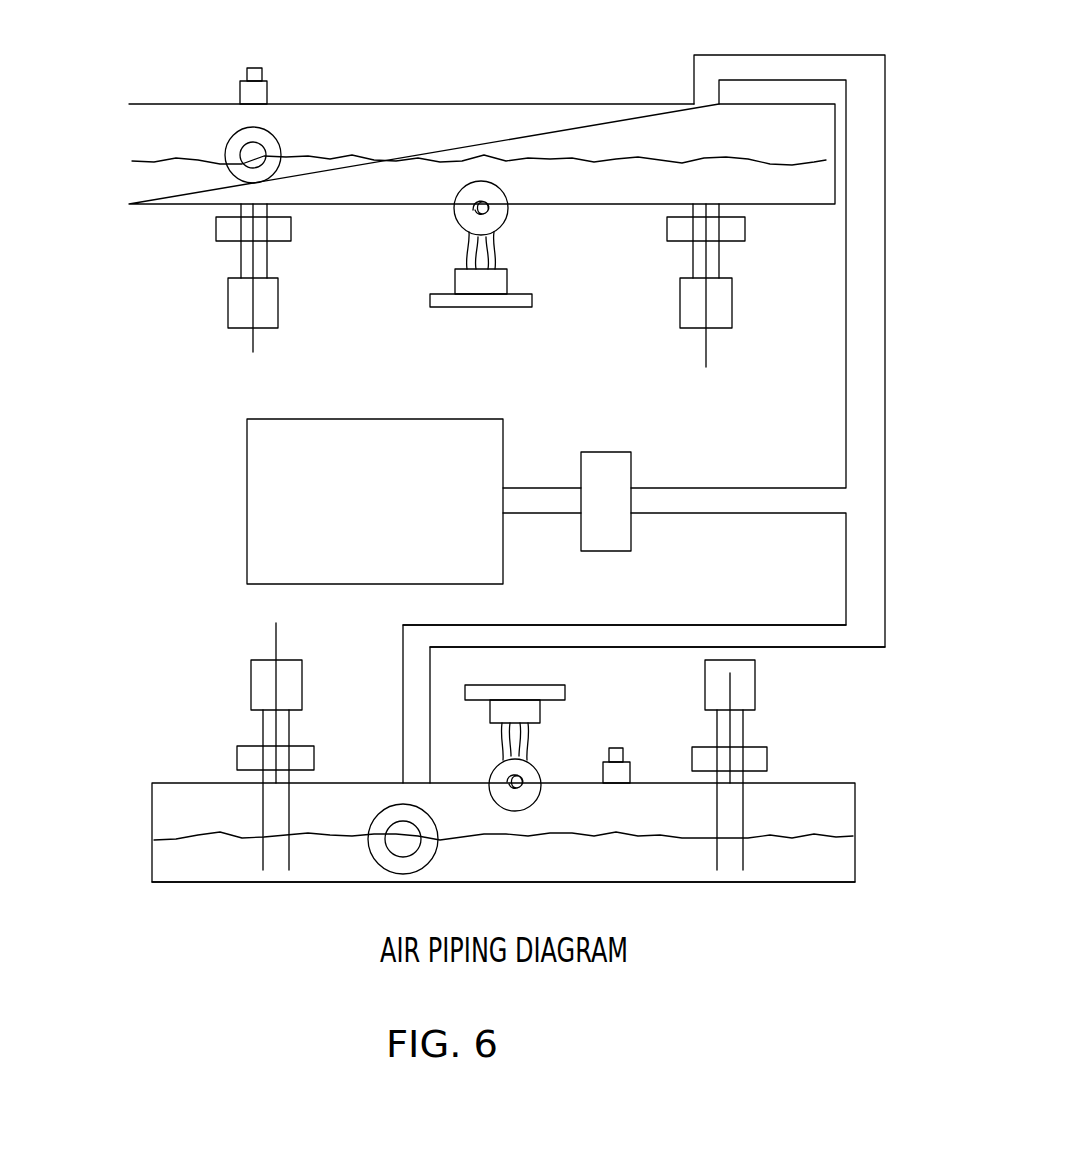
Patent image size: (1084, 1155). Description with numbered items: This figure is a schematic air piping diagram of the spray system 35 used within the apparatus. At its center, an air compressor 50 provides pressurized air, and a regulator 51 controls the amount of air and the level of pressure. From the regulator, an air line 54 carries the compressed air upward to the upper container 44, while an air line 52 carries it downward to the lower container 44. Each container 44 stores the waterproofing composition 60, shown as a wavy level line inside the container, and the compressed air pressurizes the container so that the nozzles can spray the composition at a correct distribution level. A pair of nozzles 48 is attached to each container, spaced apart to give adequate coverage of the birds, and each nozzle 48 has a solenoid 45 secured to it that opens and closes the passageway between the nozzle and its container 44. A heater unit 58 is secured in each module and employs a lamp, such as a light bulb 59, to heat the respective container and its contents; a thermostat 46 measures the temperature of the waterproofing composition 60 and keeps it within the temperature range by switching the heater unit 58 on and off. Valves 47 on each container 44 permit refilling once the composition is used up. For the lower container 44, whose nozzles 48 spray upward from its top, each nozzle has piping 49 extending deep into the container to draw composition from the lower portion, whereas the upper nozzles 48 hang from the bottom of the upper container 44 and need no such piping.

The spray system 35 is at (138, 628).
The container 44 is at (192, 884).
The solenoid 45 is at (215, 235).
The thermostat 46 is at (280, 145).
The valve 47 is at (258, 67).
The nozzle 48 is at (226, 295).
The piping 49 is at (262, 868).
The air compressor 50 is at (337, 418).
The regulator 51 is at (604, 452).
The air line 52 is at (684, 622).
The air line 54 is at (884, 343).
The heater unit 58 is at (505, 308).
The light bulb 59 is at (497, 230).
The waterproofing composition 60 is at (573, 175).